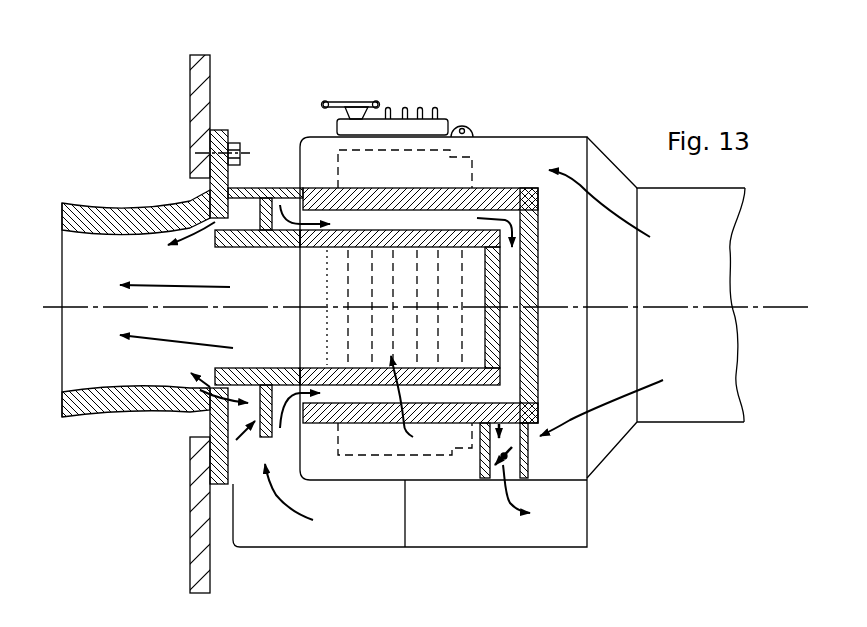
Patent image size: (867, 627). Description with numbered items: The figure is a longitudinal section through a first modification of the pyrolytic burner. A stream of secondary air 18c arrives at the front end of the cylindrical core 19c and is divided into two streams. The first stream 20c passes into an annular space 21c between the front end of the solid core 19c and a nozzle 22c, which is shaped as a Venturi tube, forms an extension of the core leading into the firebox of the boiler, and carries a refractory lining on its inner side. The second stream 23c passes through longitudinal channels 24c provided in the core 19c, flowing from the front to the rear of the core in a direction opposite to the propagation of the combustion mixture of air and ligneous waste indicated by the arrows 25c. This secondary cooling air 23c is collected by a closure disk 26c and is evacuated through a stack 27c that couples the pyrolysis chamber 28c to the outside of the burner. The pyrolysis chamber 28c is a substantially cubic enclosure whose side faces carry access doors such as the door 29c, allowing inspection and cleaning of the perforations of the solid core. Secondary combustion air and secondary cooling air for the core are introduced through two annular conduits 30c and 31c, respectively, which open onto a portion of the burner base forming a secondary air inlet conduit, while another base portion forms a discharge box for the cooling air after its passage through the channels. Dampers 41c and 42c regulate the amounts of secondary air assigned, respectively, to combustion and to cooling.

The stream of secondary air 18c is at (293, 528).
The cylindrical core 19c is at (376, 260).
The first stream 20c is at (185, 250).
The annular space 21c is at (231, 220).
The nozzle 22c is at (80, 229).
The second stream 23c is at (300, 137).
The longitudinal channels 24c is at (417, 400).
The combustion mixture arrows 25c is at (290, 268).
The closure disk 26c is at (428, 266).
The stack 27c is at (515, 433).
The pyrolysis chamber 28c is at (550, 137).
The access door 29c is at (420, 128).
The annular conduit 30c is at (233, 549).
The annular conduit 31c is at (294, 405).
The damper 41c is at (246, 443).
The damper 42c is at (527, 442).